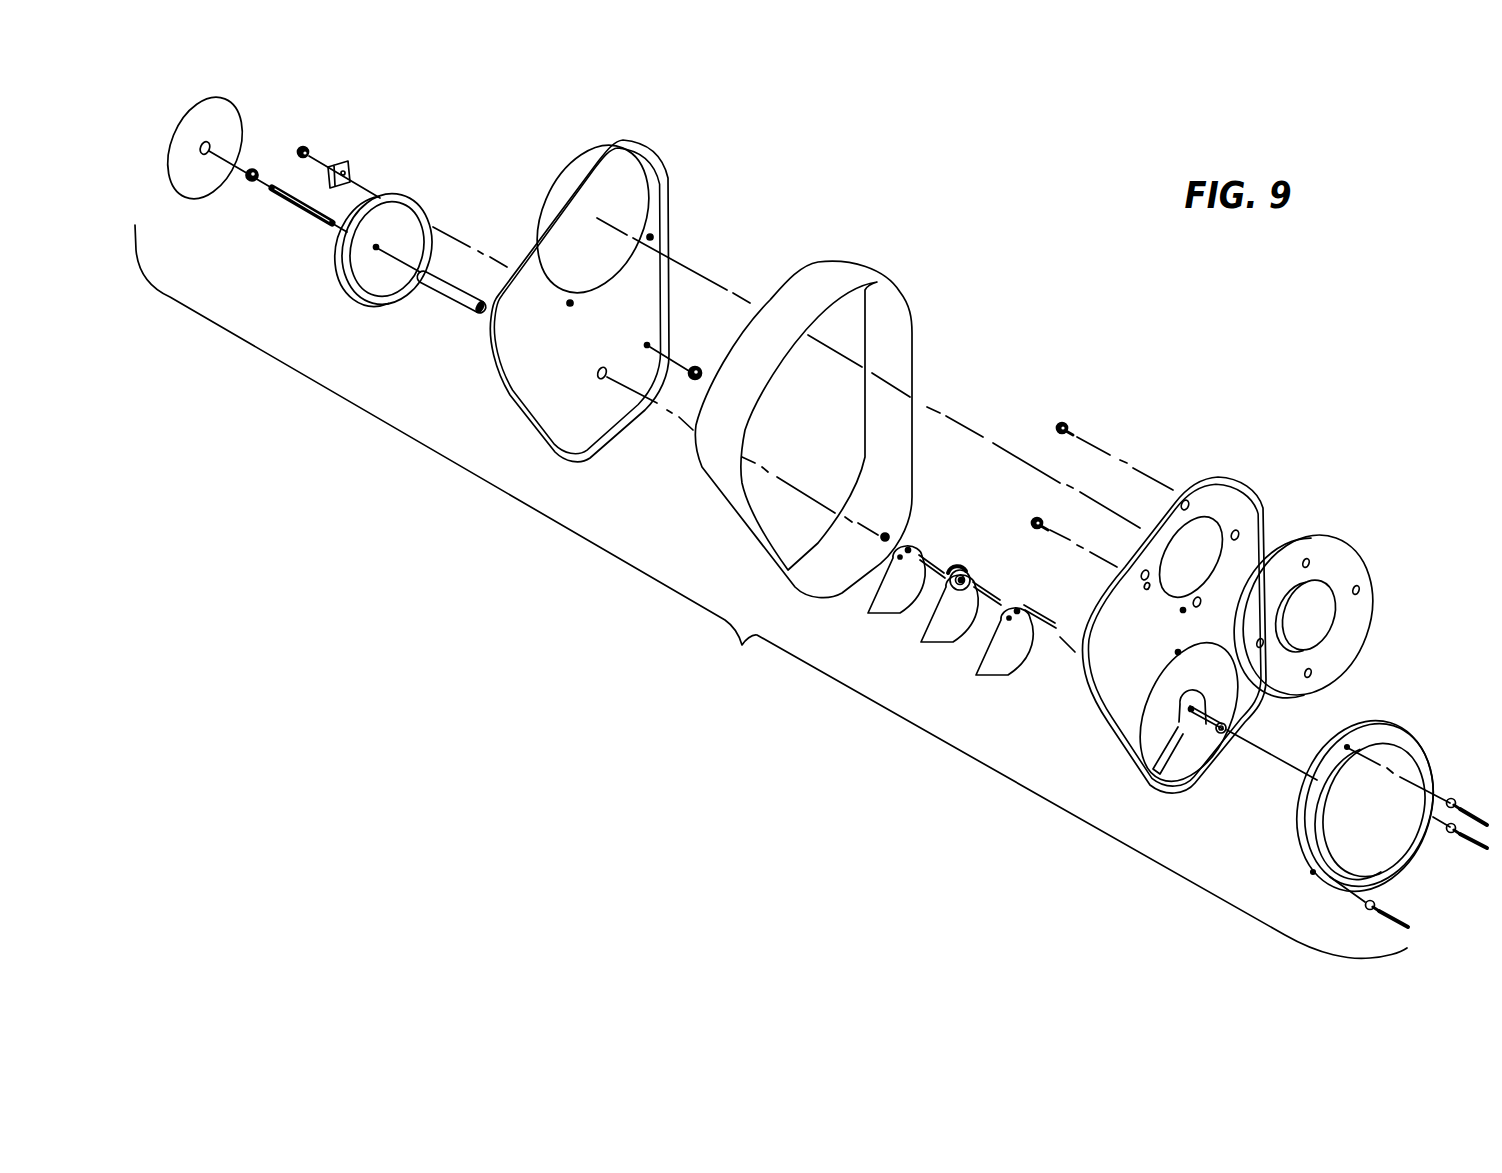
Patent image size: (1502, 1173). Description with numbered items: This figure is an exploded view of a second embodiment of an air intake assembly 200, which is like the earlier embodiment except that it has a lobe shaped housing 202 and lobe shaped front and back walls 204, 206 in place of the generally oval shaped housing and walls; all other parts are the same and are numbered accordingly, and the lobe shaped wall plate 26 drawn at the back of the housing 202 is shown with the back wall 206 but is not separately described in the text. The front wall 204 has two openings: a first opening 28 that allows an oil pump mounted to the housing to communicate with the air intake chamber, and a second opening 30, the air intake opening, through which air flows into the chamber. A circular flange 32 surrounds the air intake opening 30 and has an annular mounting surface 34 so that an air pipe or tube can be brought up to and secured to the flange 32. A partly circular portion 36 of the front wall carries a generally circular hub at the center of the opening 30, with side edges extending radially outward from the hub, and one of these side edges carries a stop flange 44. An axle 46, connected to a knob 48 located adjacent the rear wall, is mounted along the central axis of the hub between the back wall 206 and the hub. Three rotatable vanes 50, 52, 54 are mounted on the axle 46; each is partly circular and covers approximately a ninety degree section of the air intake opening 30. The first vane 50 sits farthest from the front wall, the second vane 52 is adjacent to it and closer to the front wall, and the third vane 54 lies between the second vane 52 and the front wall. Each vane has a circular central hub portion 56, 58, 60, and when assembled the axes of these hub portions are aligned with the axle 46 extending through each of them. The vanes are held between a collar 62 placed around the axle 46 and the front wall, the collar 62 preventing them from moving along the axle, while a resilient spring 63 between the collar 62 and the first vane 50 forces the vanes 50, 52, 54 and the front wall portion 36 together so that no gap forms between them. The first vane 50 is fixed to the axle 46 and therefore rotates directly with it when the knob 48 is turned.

The air intake assembly 200 is at (771, 591).
The axle 46 is at (287, 203).
The knob 48 is at (336, 262).
The collar 62 is at (446, 290).
The front plate 26 is at (637, 197).
The lobe shaped back wall 206 is at (633, 298).
The lobe shaped housing 202 is at (840, 272).
The resilient spring 63 is at (880, 540).
The first rotatable vane 50 is at (888, 604).
The second rotatable vane 52 is at (940, 638).
The third rotatable vane 54 is at (1007, 664).
The circular central hub portion 56 is at (920, 543).
The circular central hub portion 58 is at (962, 570).
The circular central hub portion 60 is at (1025, 602).
The lobe shaped front wall 204 is at (1237, 497).
The first opening 28 is at (1207, 533).
The air intake opening 30 is at (1157, 718).
The stop flange 44 is at (1163, 760).
The partly circular portion of the front wall 36 is at (1198, 740).
The circular flange 32 is at (1392, 732).
The annular mounting surface 34 is at (1320, 822).